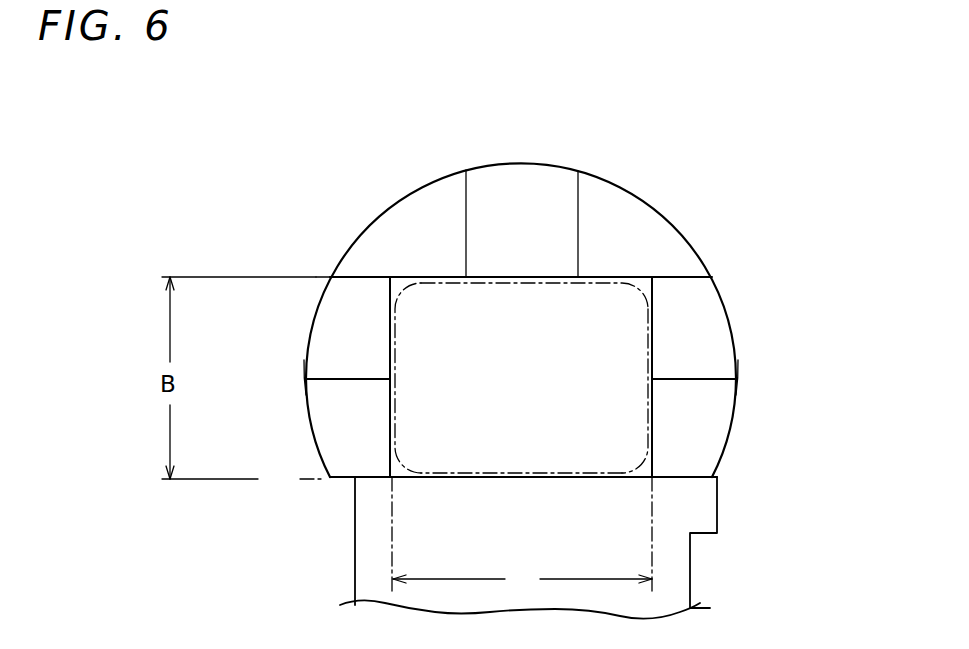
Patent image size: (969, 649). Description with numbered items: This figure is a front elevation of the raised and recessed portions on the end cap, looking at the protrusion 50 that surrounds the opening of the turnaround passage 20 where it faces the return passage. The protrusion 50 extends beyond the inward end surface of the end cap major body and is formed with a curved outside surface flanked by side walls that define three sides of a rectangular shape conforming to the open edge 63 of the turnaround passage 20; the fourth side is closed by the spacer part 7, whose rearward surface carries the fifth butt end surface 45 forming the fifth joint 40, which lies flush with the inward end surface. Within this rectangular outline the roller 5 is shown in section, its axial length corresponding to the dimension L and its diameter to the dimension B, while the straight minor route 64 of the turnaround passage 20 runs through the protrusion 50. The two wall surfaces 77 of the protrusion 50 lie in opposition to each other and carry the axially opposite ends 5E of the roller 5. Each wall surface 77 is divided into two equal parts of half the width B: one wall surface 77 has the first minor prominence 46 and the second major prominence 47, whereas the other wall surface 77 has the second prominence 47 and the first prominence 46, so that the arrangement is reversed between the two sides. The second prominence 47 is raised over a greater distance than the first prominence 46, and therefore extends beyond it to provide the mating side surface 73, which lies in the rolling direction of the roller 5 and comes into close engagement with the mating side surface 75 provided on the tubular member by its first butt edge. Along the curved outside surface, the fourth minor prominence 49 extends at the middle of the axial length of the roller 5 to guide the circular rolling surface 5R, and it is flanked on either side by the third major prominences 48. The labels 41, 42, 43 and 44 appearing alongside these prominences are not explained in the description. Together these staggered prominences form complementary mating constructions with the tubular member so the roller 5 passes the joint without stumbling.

The roller 5 is at (607, 325).
The circular rolling surface of the roller 5R is at (425, 323).
The axially opposite ends of the roller 5E is at (653, 358).
The spacer part 7 is at (665, 575).
The turnaround passage 20 is at (522, 494).
The straight minor route 64 is at (522, 395).
The fifth joint 40 is at (474, 548).
The fifth butt end surface 45 is at (412, 538).
The side wall 41 is at (544, 364).
The first minor prominence 46 is at (338, 305).
The side wall 42 is at (530, 374).
The second major prominence 47 is at (330, 422).
The upper inclined wall 43 is at (524, 204).
The third major prominence 48 is at (418, 222).
The fourth minor prominence 49 is at (521, 198).
The top wall portion 44 is at (518, 200).
The protrusion 50 is at (690, 228).
The open edge of the turnaround passage 63 is at (413, 437).
The mating side surface of the second joint 73 is at (323, 378).
The mating side surface of the tubular member 75 is at (347, 383).
The wall surface 77 is at (393, 362).